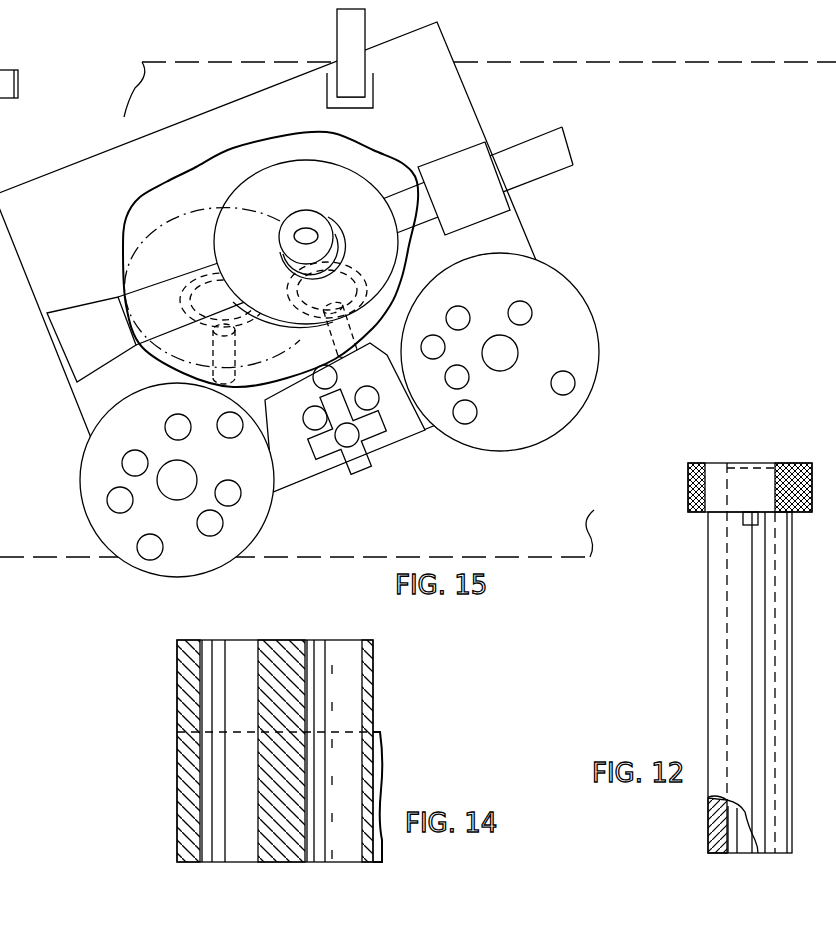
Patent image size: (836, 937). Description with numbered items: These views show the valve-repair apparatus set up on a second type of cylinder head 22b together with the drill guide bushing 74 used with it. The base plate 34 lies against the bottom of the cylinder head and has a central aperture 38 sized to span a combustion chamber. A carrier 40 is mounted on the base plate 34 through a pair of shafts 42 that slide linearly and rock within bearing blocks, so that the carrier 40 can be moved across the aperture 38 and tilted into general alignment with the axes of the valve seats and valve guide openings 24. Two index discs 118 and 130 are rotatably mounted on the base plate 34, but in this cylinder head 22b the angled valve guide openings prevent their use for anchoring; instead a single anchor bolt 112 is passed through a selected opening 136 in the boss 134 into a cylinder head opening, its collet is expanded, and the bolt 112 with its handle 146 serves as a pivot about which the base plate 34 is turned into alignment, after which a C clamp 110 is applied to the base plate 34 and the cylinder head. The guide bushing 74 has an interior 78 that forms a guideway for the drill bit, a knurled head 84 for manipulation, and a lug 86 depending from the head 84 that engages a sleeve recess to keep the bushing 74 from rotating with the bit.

In FIG. 15, the cylinder head 22b is at (594, 52).
In FIG. 15, the base plate 34 is at (175, 126).
In FIG. 14, the base plate 34 is at (381, 742).
In FIG. 15, the central aperture 38 is at (191, 182).
In FIG. 15, the carrier 40 is at (165, 230).
In FIG. 15, the shafts 42 is at (121, 284).
In FIG. 15, the valve guide openings 24 is at (238, 352).
In FIG. 15, the C clamp 110 is at (337, 32).
In FIG. 15, the anchor bolt 112 is at (384, 471).
In FIG. 15, the disc 118 is at (583, 310).
In FIG. 15, the second disc 130 is at (117, 556).
In FIG. 15, the boss 134 is at (316, 478).
In FIG. 14, the boss 134 is at (370, 681).
In FIG. 15, the openings 136 is at (313, 404).
In FIG. 14, the openings 136 is at (208, 705).
In FIG. 15, the handle 146 is at (338, 465).
In FIG. 12, the guide bushing 74 is at (710, 603).
In FIG. 12, the interior 78 is at (733, 829).
In FIG. 12, the knurled head 84 is at (692, 495).
In FIG. 12, the lug 86 is at (745, 520).